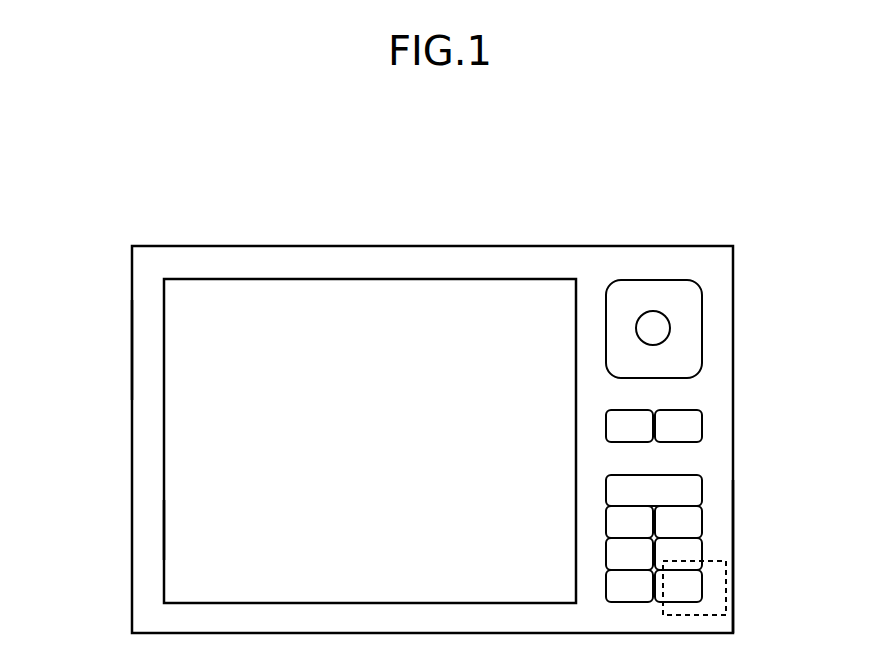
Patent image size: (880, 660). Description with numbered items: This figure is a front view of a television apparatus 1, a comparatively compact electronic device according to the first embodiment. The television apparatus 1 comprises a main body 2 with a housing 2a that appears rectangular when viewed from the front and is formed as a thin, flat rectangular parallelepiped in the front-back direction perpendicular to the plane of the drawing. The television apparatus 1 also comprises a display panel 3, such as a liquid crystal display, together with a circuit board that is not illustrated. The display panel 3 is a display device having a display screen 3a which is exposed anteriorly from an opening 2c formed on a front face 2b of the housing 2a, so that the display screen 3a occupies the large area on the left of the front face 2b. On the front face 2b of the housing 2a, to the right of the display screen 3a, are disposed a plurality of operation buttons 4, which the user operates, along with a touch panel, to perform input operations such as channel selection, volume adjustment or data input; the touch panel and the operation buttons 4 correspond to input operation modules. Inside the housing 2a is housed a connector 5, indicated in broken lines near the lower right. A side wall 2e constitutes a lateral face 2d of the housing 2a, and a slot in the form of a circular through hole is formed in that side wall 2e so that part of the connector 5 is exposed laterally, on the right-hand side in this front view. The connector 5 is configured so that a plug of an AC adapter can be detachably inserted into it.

The television apparatus 1 is at (648, 187).
The main body 2 is at (691, 245).
The housing 2a is at (377, 439).
The front face 2b is at (145, 344).
The opening 2c is at (170, 528).
The lateral face 2d is at (795, 556).
The side wall 2e is at (735, 548).
The display panel 3 is at (370, 399).
The display screen 3a is at (365, 300).
The operation buttons 4 is at (685, 360).
The connector 5 is at (733, 593).